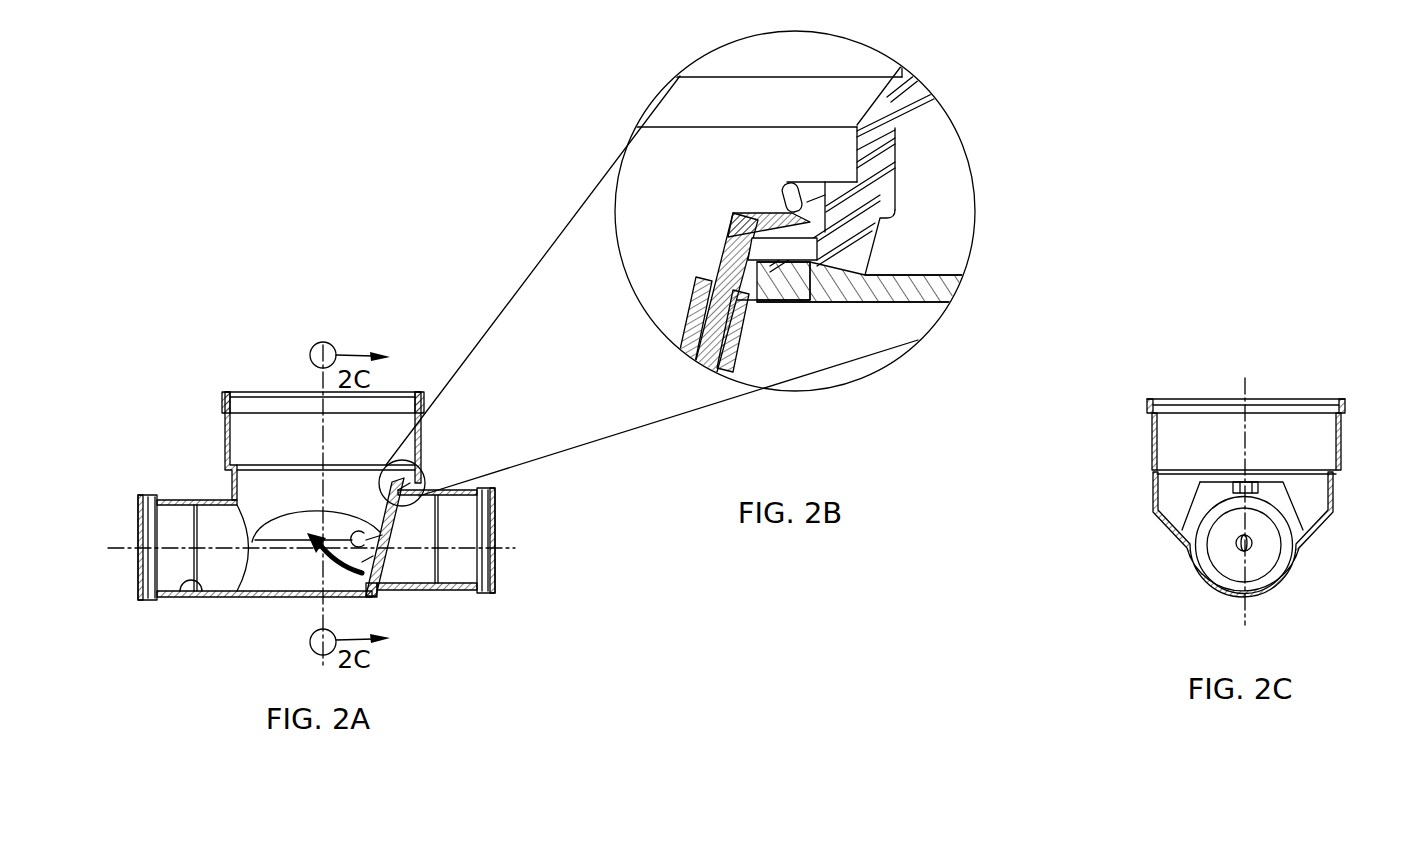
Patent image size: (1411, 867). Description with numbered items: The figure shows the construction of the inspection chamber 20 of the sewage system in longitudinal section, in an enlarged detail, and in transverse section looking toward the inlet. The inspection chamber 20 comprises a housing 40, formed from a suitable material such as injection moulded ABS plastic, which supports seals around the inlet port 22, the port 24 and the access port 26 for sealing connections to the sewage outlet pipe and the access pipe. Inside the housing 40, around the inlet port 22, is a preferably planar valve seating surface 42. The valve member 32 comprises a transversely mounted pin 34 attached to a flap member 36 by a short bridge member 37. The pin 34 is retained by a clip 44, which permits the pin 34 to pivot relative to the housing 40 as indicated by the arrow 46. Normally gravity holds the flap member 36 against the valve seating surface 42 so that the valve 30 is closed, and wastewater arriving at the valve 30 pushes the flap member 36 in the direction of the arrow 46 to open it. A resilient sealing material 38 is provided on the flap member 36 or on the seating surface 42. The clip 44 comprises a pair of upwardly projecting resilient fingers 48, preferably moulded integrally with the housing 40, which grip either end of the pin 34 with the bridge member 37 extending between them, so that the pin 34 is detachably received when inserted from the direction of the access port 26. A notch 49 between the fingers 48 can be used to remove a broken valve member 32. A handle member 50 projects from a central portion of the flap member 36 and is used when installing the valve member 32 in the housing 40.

In FIG. 2A, the inspection chamber 20 is at (235, 490).
In FIG. 2A, the inlet port 22 is at (476, 534).
In FIG. 2B, the inlet port 22 is at (878, 182).
In FIG. 2A, the port 24 is at (214, 538).
In FIG. 2A, the access port 26 is at (286, 422).
In FIG. 2B, the access port 26 is at (751, 122).
In FIG. 2C, the access port 26 is at (1246, 436).
In FIG. 2A, the valve 30 is at (432, 620).
In FIG. 2A, the valve member 32 is at (364, 439).
In FIG. 2B, the valve member 32 is at (669, 207).
In FIG. 2B, the pin 34 is at (932, 209).
In FIG. 2A, the flap member 36 is at (286, 412).
In FIG. 2B, the flap member 36 is at (673, 298).
In FIG. 2B, the bridge member 37 is at (715, 268).
In FIG. 2B, the resilient sealing material 38 is at (780, 389).
In FIG. 2A, the housing 40 is at (158, 622).
In FIG. 2C, the valve seating surface 42 is at (1263, 534).
In FIG. 2A, the clip 44 is at (449, 466).
In FIG. 2A, the arrow 46 is at (287, 598).
In FIG. 2C, the resilient fingers 48 is at (1244, 456).
In FIG. 2B, the notch 49 is at (903, 305).
In FIG. 2A, the handle member 50 is at (281, 437).